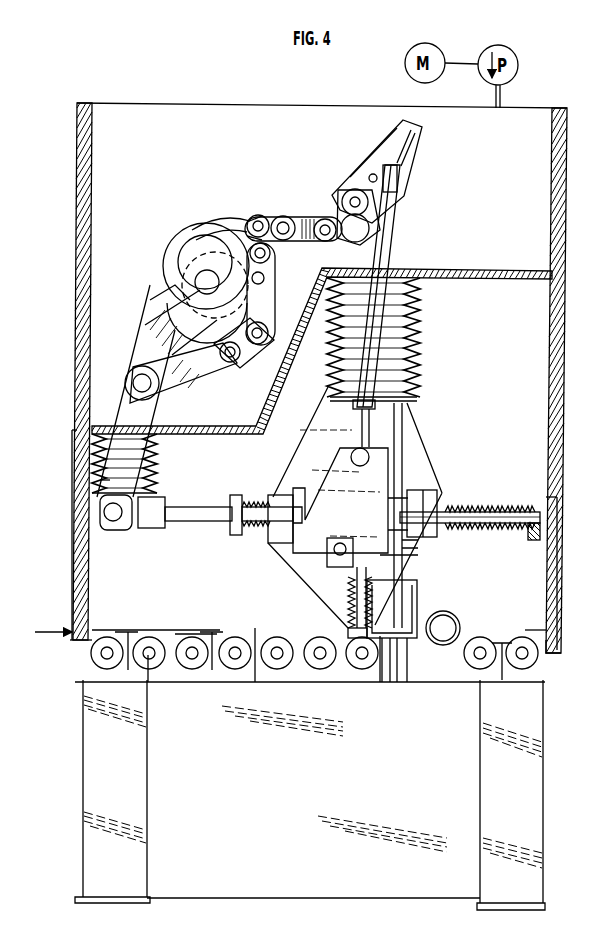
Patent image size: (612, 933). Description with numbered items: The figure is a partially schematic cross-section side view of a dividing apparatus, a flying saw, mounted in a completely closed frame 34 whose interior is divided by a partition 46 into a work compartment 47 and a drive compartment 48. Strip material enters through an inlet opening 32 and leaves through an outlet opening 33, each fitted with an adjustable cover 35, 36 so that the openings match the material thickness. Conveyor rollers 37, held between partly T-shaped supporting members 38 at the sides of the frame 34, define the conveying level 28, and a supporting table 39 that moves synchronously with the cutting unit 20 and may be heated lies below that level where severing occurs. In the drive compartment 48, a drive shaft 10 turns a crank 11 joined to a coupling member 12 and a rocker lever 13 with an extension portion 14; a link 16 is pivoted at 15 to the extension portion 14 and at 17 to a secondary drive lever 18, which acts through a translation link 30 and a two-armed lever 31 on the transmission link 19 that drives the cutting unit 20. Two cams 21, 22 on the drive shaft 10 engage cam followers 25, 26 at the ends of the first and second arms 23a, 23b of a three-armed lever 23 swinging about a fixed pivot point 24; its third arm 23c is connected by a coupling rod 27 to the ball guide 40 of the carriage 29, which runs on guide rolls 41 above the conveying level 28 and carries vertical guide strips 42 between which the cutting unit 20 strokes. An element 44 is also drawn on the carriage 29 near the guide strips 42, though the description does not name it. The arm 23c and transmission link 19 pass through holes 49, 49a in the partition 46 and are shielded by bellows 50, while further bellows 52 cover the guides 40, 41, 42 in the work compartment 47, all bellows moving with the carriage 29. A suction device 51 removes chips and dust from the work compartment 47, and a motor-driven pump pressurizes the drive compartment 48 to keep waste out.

The drive shaft 10 is at (196, 282).
The crank 11 is at (180, 255).
The coupling member 12 is at (185, 232).
The rocker lever 13 is at (266, 308).
The extension portion 14 is at (266, 279).
The pivot connection 15 is at (270, 255).
The link 16 is at (252, 219).
The pivot connection 17 is at (259, 214).
The secondary drive lever 18 is at (292, 218).
The transmission link member 19 is at (372, 378).
The cutting unit 20 is at (396, 558).
The cam 21 is at (218, 226).
The cam 22 is at (257, 345).
The three-armed lever 23 is at (133, 343).
The first arm 23a is at (140, 342).
The second arm 23b is at (205, 360).
The third arm 23c is at (98, 403).
The fixed pivot point 24 is at (132, 382).
The cam follower 25 is at (187, 292).
The cam follower 26 is at (230, 364).
The coupling rod 27 is at (132, 518).
The conveying level 28 is at (92, 638).
The carriage 29 is at (320, 510).
The translation link 30 is at (355, 240).
The two-armed lever 31 is at (382, 157).
The inlet opening 32 is at (98, 576).
The outlet opening 33 is at (546, 630).
The frame 34 is at (492, 796).
The adjustable cover 35 is at (73, 508).
The adjustable cover 36 is at (553, 525).
The conveyor rollers 37 is at (112, 665).
The T-shaped supporting members 38 is at (502, 680).
The supporting table 39 is at (383, 666).
The ball guide 40 is at (432, 503).
The guide rolls 41 is at (486, 524).
The guide strips 42 is at (352, 612).
The pivot block 44 is at (340, 543).
The partition 46 is at (265, 418).
The work compartment 47 is at (310, 670).
The drive compartment 48 is at (150, 112).
The hole 49 is at (153, 434).
The hole 49a is at (392, 272).
The bellows 50 is at (395, 335).
The suction device 51 is at (445, 646).
The bellows 52 is at (256, 503).